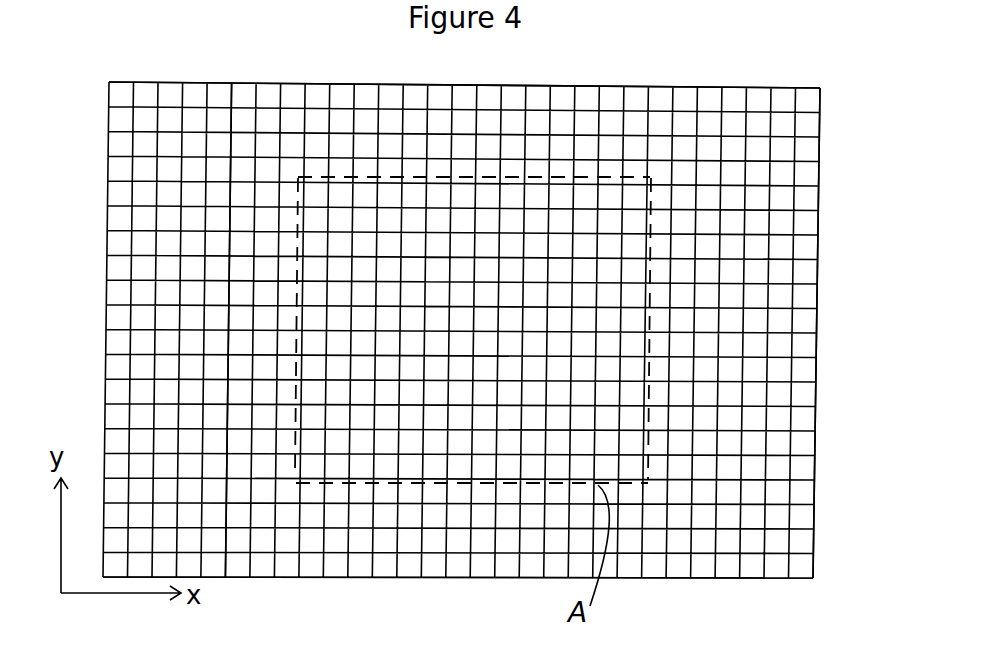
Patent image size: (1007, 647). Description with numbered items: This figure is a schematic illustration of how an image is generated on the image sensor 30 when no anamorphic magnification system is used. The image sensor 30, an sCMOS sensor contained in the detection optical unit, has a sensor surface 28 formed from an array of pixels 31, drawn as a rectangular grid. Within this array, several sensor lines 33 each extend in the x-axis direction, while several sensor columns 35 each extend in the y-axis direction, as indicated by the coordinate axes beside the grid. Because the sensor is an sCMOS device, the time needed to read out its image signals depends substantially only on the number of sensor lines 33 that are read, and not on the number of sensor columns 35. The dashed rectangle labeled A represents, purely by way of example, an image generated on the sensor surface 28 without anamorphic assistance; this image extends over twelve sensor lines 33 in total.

The image sensor 30 is at (92, 122).
The sensor column 35 is at (248, 70).
The pixel 31 is at (756, 97).
The sensor line 33 is at (832, 132).
The sensor surface 28 is at (812, 546).